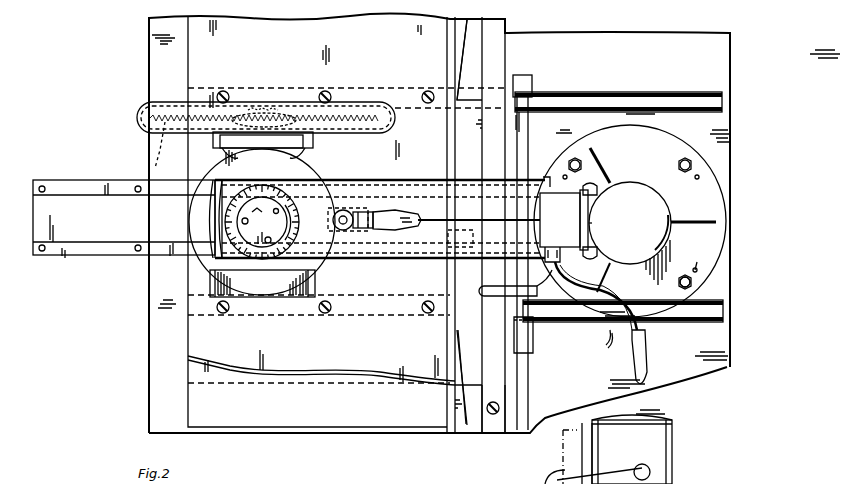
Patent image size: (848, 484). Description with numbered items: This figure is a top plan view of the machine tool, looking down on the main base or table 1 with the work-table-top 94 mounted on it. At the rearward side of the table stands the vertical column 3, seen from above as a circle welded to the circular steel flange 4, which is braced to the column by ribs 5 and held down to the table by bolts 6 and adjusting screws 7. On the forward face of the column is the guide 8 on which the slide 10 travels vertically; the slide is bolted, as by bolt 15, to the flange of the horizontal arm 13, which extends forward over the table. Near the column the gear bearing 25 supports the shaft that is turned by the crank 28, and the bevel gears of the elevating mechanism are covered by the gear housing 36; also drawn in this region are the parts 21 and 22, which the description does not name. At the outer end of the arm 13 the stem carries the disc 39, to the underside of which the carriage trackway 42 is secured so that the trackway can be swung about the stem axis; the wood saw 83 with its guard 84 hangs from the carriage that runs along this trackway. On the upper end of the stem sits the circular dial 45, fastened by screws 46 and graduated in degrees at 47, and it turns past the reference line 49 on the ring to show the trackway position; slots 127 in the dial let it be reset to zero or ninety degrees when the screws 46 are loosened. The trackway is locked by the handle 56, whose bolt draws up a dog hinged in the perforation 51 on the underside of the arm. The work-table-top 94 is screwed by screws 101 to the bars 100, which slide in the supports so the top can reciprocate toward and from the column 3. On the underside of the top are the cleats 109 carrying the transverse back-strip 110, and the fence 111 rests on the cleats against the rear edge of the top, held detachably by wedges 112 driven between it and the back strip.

The main base or table 1 is at (158, 397).
The vertical column 3 is at (660, 210).
The steel flange 4 is at (677, 139).
The ribs 5 is at (608, 175).
The bolts 6 is at (691, 282).
The adjusting screws 7 is at (696, 268).
The guide 8 is at (588, 226).
The slide 10 is at (577, 453).
The horizontal arm 13 is at (438, 262).
The bolt 15 is at (341, 215).
The cylinder 21 is at (633, 468).
The pipe 22 is at (490, 286).
The gear bearing 25 is at (560, 252).
The crank 28 is at (630, 336).
The gear housing 36 is at (568, 218).
The plate (disc) 39 is at (320, 172).
The carriage trackway 42 is at (124, 219).
The circular dial 45 is at (280, 178).
The screws 46 is at (262, 222).
The graduations (dial scale) 47 is at (262, 282).
The reference line 49 is at (218, 224).
The perforation 51 is at (438, 219).
The handle 56 is at (400, 228).
The wood saw 83 is at (161, 145).
The guard 84 is at (138, 128).
The work-table-top 94 is at (190, 345).
The bars 100 is at (606, 95).
The screws 101 is at (224, 314).
The cleats 109 is at (470, 424).
The transverse back-strip 110 is at (503, 424).
The fence 111 is at (452, 403).
The wedges 112 is at (470, 56).
The slots 127 is at (250, 209).